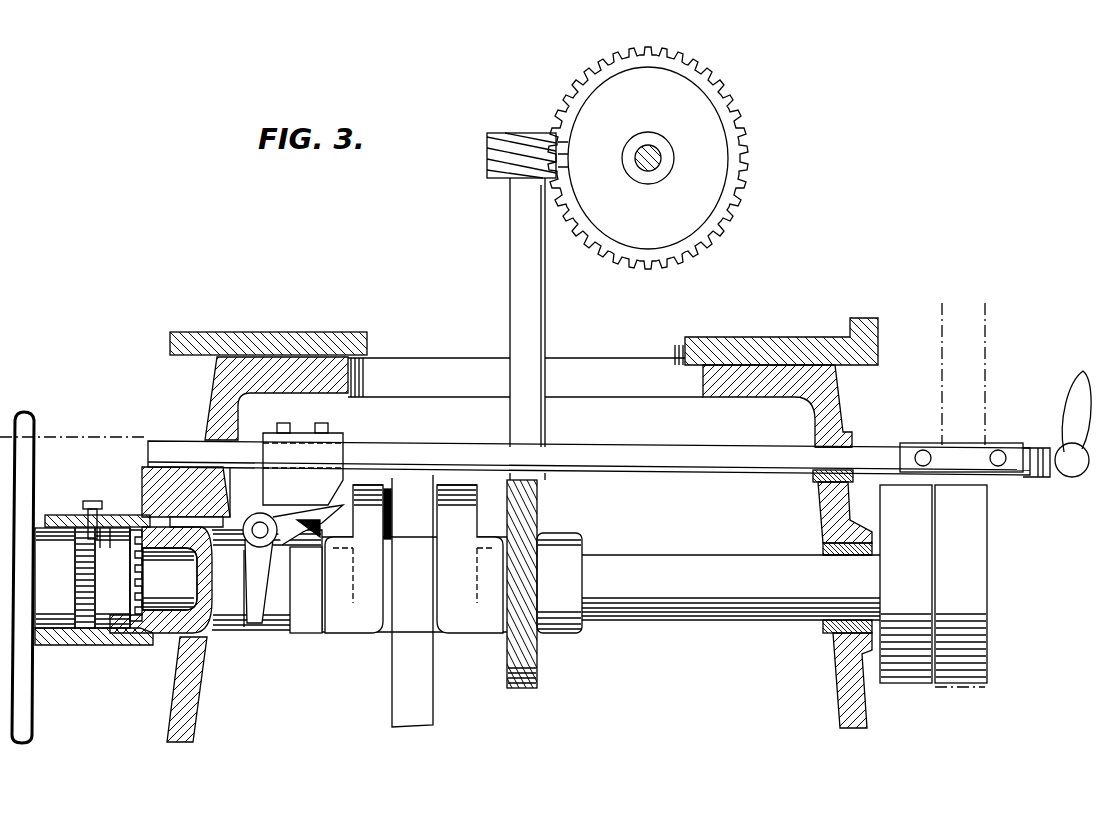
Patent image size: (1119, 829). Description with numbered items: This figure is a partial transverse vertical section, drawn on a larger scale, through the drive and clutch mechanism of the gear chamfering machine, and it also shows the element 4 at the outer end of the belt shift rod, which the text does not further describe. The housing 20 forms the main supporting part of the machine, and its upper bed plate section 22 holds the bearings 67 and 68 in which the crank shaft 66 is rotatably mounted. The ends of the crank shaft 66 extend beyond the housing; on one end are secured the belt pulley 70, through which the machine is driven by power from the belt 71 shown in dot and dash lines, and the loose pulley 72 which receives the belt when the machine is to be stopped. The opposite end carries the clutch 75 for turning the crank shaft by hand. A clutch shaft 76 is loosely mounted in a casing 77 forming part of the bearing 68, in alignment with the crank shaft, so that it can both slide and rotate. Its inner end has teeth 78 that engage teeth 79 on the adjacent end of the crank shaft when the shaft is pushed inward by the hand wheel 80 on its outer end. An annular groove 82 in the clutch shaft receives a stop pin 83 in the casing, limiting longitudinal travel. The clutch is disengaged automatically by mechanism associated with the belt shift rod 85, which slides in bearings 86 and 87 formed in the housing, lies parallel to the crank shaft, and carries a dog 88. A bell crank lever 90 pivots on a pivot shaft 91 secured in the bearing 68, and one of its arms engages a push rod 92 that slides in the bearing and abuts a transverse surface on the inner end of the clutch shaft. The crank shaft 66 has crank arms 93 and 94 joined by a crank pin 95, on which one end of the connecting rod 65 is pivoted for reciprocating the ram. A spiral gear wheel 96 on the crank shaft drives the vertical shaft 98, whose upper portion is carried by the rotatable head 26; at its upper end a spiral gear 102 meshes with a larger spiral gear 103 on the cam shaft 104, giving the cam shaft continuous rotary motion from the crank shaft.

The handle knob 4 is at (1062, 446).
The housing 20 is at (212, 386).
The upper bed plate section 22 is at (167, 727).
The head 26 is at (169, 333).
The connecting rod 65 is at (430, 707).
The crank shaft 66 is at (640, 620).
The bearing 67 is at (822, 625).
The bearing 68 is at (217, 627).
The belt pulley 70 is at (988, 643).
The belt 71 is at (983, 367).
The loose pulley 72 is at (885, 683).
The clutch 75 is at (110, 520).
The clutch shaft 76 is at (105, 615).
The casing 77 is at (62, 514).
The teeth 78 is at (128, 567).
The teeth 79 is at (138, 530).
The hand wheel 80 is at (32, 416).
The annular groove 82 is at (77, 622).
The stop pin 83 is at (87, 532).
The belt shift rod 85 is at (700, 449).
The bearing 86 is at (817, 445).
The bearing 87 is at (225, 486).
The dog 88 is at (306, 432).
The bell crank lever 90 is at (253, 587).
The pivot shaft 91 is at (257, 524).
The push rod 92 is at (237, 630).
The crank arm 93 is at (368, 628).
The crank arm 94 is at (450, 628).
The crank pin 95 is at (478, 513).
The spiral gear wheel 96 is at (537, 668).
The vertical shaft 98 is at (508, 297).
The spiral gear 102 is at (489, 177).
The spiral gear 103 is at (742, 205).
The cam shaft 104 is at (659, 162).